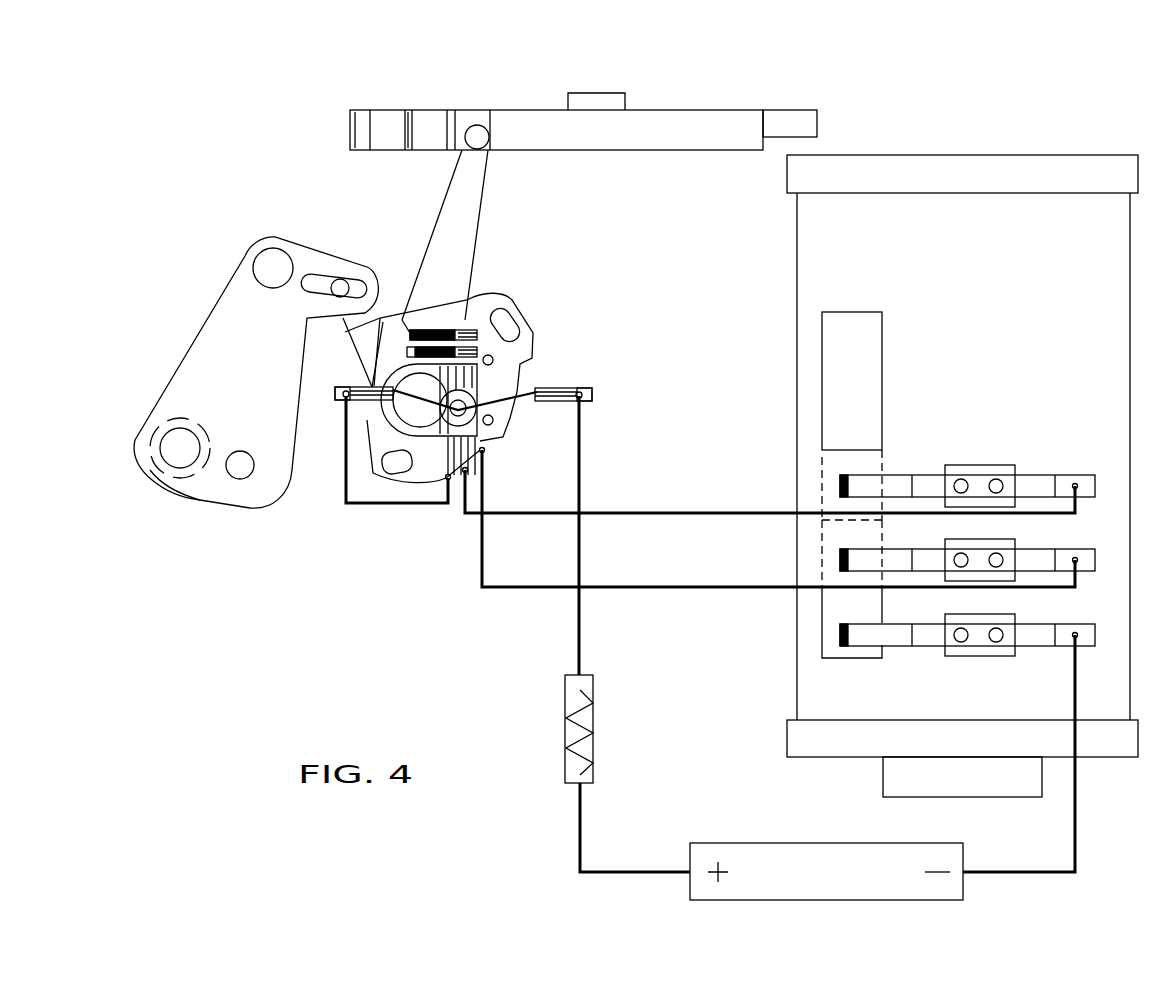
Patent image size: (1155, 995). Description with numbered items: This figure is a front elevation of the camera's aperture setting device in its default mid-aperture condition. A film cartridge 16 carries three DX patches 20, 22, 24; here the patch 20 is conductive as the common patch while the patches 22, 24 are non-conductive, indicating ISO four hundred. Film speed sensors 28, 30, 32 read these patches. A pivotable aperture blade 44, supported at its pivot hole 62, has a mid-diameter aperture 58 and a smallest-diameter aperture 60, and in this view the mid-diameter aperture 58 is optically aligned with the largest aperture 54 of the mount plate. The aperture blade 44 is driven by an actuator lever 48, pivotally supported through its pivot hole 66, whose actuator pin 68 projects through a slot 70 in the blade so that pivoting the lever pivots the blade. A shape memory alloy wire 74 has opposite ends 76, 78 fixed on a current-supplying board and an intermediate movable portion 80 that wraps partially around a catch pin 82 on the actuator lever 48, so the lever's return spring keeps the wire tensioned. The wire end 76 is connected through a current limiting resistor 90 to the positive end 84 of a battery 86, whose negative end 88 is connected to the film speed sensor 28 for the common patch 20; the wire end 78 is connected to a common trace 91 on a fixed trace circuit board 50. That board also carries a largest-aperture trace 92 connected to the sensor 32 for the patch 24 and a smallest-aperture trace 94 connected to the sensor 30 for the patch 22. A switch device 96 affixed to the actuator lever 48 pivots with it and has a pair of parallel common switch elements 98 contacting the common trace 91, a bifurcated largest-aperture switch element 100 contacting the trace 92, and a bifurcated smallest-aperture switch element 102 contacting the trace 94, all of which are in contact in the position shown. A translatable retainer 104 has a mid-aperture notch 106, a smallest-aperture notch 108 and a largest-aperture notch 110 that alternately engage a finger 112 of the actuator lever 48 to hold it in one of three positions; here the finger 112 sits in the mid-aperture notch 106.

The film cartridge 16 is at (1070, 154).
The patch 20 is at (832, 612).
The patch 22 is at (832, 540).
The patch 24 is at (832, 463).
The film speed sensor 28 is at (904, 648).
The film speed sensor 30 is at (888, 566).
The film speed sensor 32 is at (900, 476).
The aperture blade 44 is at (223, 514).
The actuator lever 48 is at (436, 232).
The trace circuit board 50 is at (544, 312).
The f/5.6 aperture 54 is at (172, 479).
The f/8 aperture 58 is at (184, 437).
The f/11 aperture 60 is at (244, 452).
The pivot hole 62 is at (256, 259).
The pivot hole 66 is at (398, 410).
The actuator pin 68 is at (345, 283).
The slot 70 is at (313, 281).
The SMA wire 74 is at (520, 420).
The wire end 76 is at (588, 390).
The wire end 78 is at (368, 392).
The intermediate movable portion 80 is at (400, 420).
The catch pin 82 is at (466, 403).
The positive end 84 is at (690, 850).
The battery 86 is at (790, 843).
The negative end 88 is at (963, 854).
The current limiting resistor 90 is at (594, 758).
The common trace 91 is at (408, 352).
The f/5.6 trace 92 is at (410, 338).
The f/11 trace 94 is at (421, 328).
The switch device 96 is at (496, 358).
The common switch elements 98 is at (420, 480).
The f/5.6 switch element 100 is at (504, 322).
The f/11 switch element 102 is at (456, 330).
The retainer 104 is at (692, 104).
The f/8 notch 106 is at (478, 110).
The f/11 notch 108 is at (430, 108).
The f/5.6 notch 110 is at (380, 108).
The finger 112 is at (483, 168).